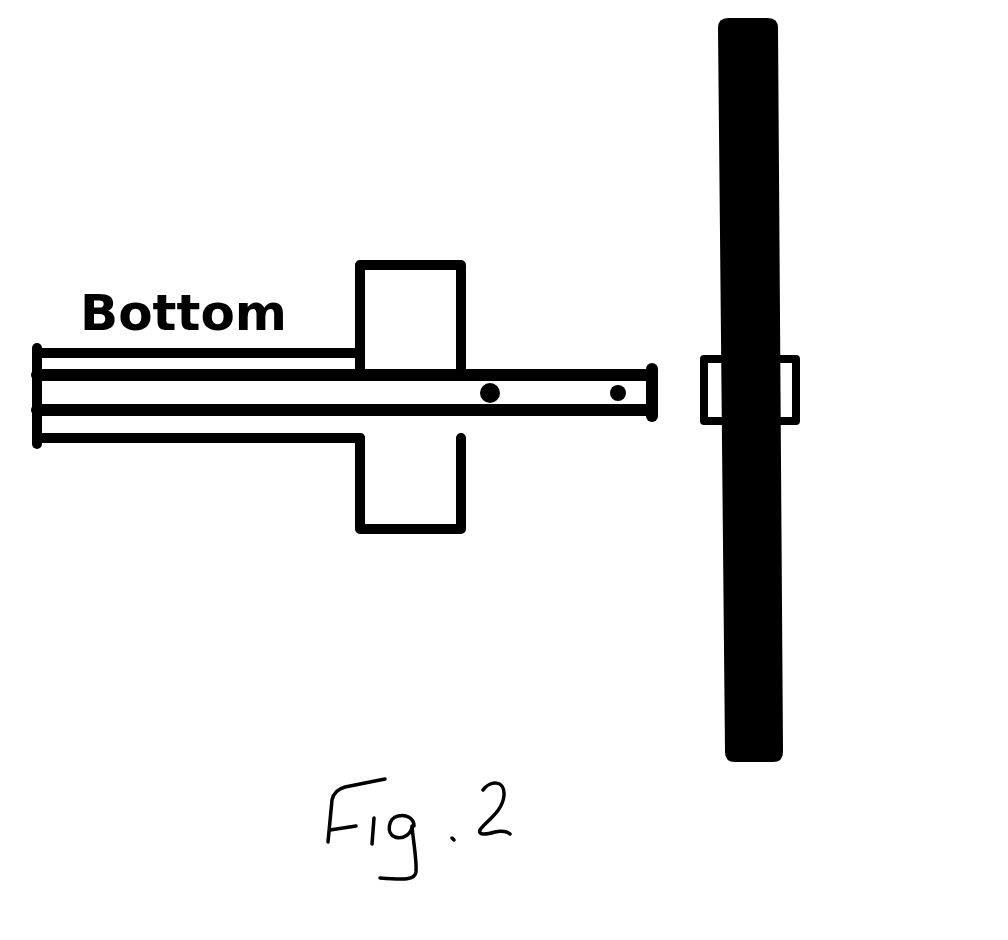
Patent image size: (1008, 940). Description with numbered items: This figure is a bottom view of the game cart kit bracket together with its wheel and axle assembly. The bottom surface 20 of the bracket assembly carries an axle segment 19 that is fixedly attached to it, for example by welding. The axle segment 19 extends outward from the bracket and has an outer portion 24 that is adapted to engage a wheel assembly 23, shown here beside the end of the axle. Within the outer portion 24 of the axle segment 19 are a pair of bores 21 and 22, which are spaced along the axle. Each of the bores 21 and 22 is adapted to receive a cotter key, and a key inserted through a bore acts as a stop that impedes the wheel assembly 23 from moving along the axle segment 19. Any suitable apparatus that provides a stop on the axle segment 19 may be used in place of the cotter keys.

The axle segment 19 is at (547, 383).
The bottom surface 20 is at (458, 300).
The bore 21 is at (632, 400).
The bore 22 is at (510, 417).
The wheel assembly 23 is at (777, 175).
The outer portion 24 is at (560, 413).